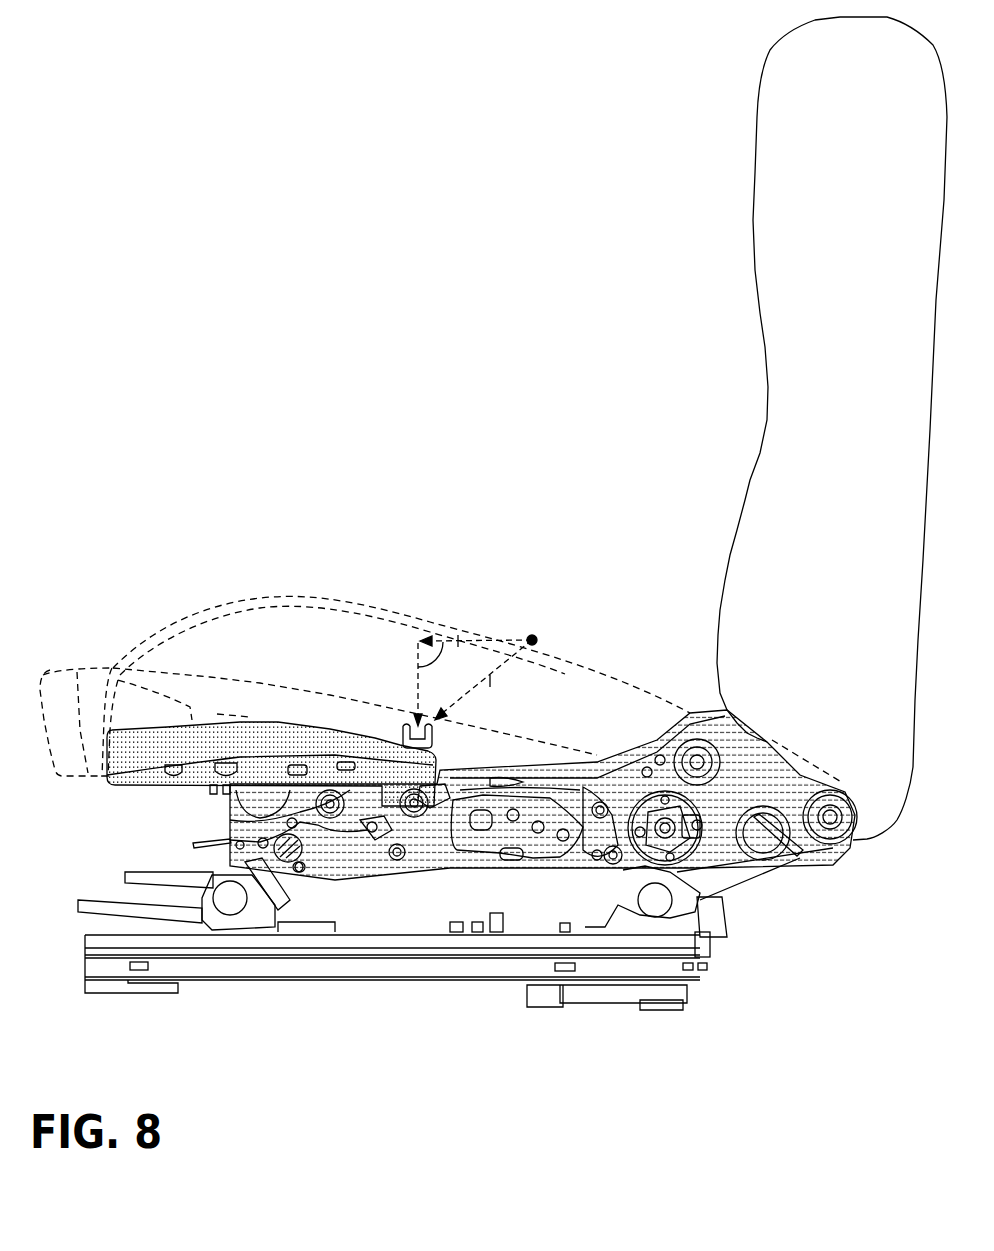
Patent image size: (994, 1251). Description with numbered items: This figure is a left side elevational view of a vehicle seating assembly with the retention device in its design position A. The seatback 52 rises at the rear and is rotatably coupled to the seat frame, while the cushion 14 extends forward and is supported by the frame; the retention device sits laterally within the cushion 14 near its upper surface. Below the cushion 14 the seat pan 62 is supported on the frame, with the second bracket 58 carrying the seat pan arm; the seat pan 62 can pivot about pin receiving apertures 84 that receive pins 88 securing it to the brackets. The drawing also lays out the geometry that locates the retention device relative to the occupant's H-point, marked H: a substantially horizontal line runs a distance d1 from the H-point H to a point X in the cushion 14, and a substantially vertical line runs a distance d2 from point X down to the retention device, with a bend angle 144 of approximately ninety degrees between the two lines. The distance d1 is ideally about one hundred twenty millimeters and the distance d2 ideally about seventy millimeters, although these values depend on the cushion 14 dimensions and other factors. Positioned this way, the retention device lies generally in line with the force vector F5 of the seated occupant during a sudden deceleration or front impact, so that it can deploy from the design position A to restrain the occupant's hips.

The seatback 52 is at (815, 163).
The cushion 14 is at (190, 655).
The seat pan 62 is at (147, 755).
The second bracket 58 is at (733, 853).
The pin receiving apertures 84 is at (372, 832).
The pins 88 is at (433, 797).
The bend angle 144 is at (441, 650).
The point X is at (418, 640).
The H-point H is at (504, 665).
The distance d1 is at (458, 641).
The distance d2 is at (415, 690).
The design position A is at (397, 739).
The force vector F5 is at (490, 681).